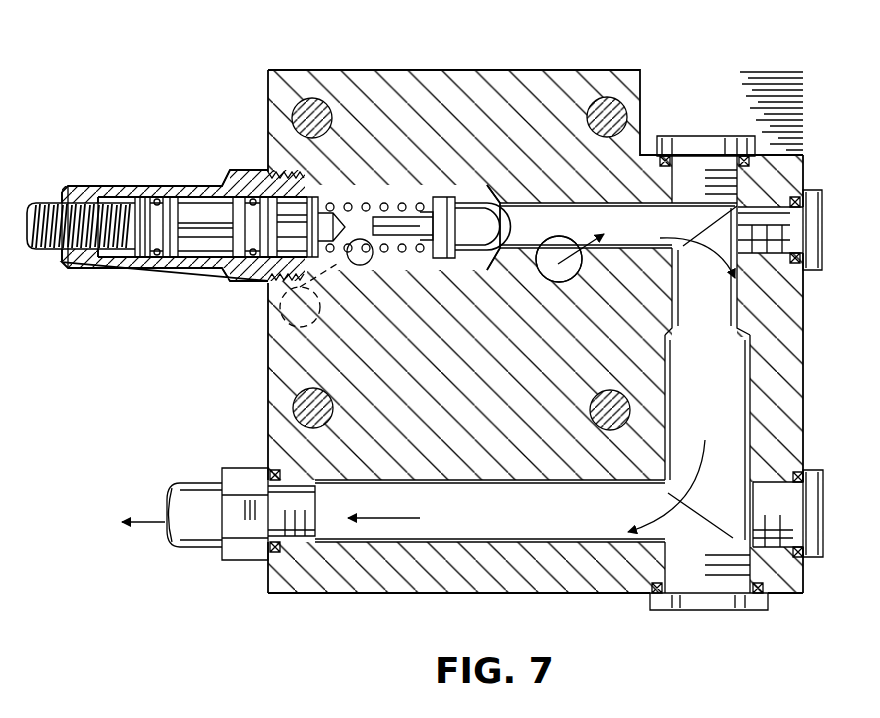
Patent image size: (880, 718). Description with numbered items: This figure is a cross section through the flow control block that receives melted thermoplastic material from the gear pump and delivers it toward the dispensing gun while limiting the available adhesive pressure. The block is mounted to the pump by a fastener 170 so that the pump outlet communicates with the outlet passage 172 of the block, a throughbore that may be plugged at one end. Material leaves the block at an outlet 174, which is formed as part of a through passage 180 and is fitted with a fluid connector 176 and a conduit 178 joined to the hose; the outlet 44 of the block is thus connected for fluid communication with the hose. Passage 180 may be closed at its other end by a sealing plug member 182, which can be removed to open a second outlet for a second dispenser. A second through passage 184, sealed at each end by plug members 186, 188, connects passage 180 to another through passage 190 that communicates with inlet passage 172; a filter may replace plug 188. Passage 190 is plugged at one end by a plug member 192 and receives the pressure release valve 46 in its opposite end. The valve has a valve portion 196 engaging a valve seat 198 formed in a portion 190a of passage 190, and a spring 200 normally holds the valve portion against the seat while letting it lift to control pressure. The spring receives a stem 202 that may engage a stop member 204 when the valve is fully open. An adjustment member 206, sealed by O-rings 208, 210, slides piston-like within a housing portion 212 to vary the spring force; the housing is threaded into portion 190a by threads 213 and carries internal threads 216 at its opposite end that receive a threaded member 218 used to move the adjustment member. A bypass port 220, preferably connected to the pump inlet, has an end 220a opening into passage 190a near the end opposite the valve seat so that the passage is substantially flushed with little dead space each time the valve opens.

The outlet 44 is at (126, 474).
The pressure release valve 46 is at (271, 226).
The fastener 170 is at (312, 98).
The outlet passage 172 is at (560, 282).
The outlet 174 is at (320, 528).
The fluid connector 176 is at (236, 470).
The conduit 178 is at (190, 550).
The through passage 180 is at (507, 485).
The sealing plug member 182 is at (823, 492).
The second through passage 184 is at (700, 403).
The plug member 186 is at (714, 150).
The plug member 188 is at (726, 608).
The through passage 190 is at (530, 207).
The portion of passage 190a is at (463, 208).
The plug member 192 is at (824, 202).
The valve portion 196 is at (460, 212).
The valve seat 198 is at (507, 204).
The spring 200 is at (405, 200).
The stem 202 is at (400, 240).
The stop member 204 is at (338, 212).
The adjustment member 206 is at (200, 222).
The O-ring 208 is at (184, 239).
The O-ring 210 is at (246, 270).
The housing portion 212 is at (112, 192).
The threads 213 is at (265, 180).
The internal threads 216 is at (74, 185).
The threaded member 218 is at (44, 250).
The bypass port 220 is at (282, 315).
The end of bypass port 220a is at (365, 265).